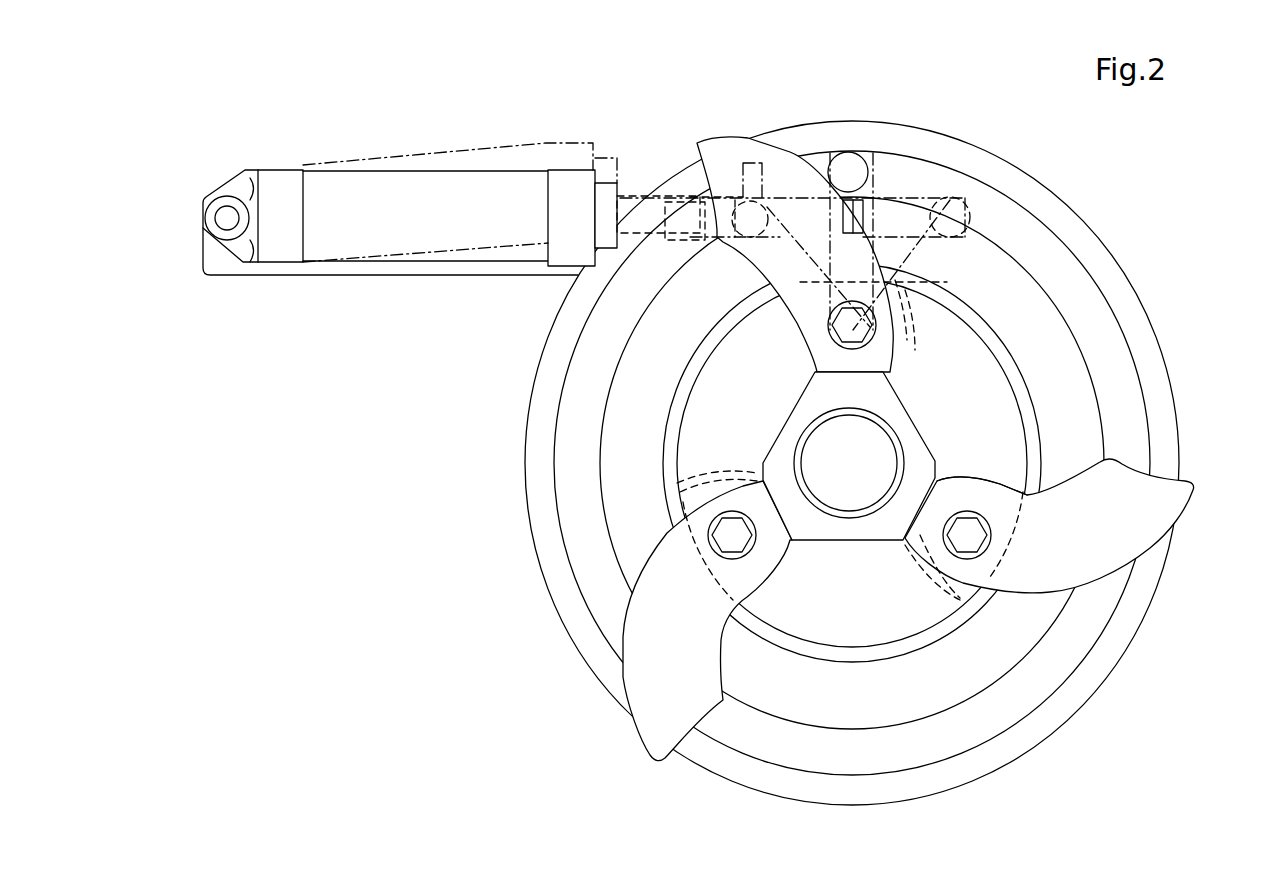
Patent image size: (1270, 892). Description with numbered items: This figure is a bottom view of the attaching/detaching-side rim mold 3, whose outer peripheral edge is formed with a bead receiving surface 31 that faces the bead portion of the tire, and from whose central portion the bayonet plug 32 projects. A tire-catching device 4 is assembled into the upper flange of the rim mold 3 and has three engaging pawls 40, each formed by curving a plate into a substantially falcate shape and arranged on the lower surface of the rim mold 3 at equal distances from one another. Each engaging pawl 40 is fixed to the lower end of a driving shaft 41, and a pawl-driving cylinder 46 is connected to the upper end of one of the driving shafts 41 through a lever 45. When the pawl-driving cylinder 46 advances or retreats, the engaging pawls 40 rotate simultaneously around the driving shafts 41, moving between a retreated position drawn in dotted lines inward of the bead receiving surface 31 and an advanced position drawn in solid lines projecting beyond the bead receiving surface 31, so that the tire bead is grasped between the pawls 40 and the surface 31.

The attaching/detaching-side rim mold 3 is at (527, 487).
The bead receiving surface 31 is at (553, 582).
The bayonet plug 32 is at (828, 531).
The tire-catching device 4 is at (961, 480).
The engaging pawl 40 is at (722, 160).
The driving shaft 41 is at (884, 338).
The lever 45 is at (775, 280).
The pawl-driving cylinder 46 is at (416, 180).